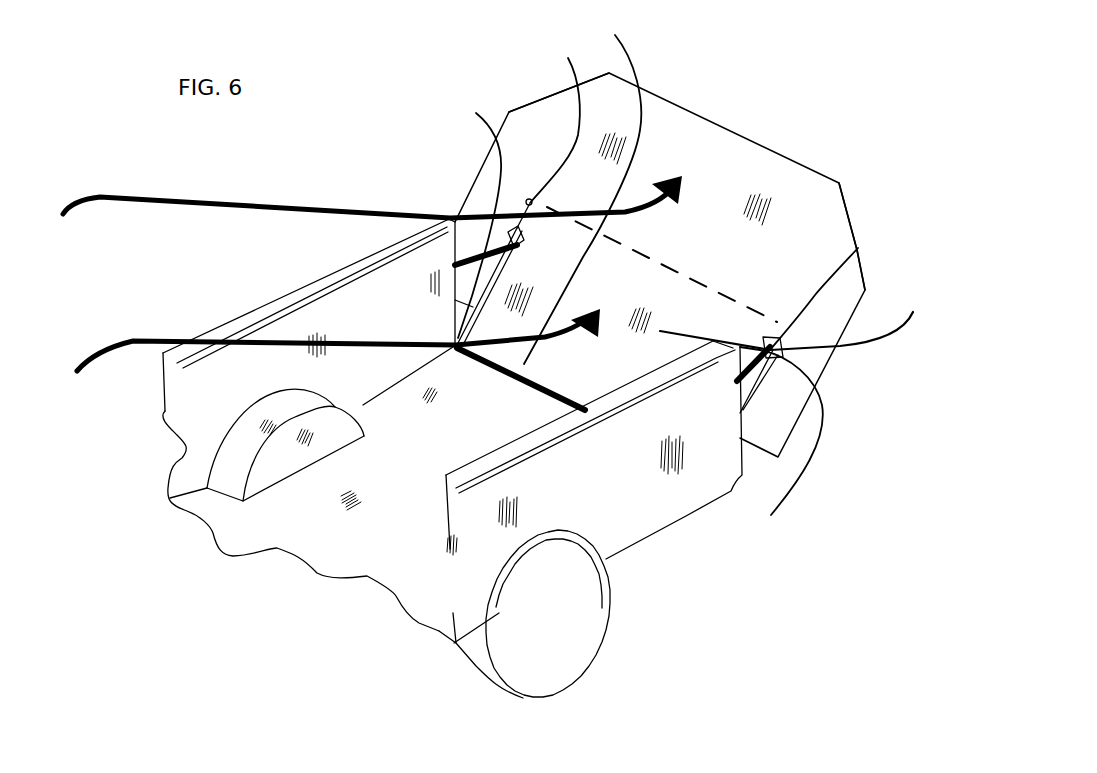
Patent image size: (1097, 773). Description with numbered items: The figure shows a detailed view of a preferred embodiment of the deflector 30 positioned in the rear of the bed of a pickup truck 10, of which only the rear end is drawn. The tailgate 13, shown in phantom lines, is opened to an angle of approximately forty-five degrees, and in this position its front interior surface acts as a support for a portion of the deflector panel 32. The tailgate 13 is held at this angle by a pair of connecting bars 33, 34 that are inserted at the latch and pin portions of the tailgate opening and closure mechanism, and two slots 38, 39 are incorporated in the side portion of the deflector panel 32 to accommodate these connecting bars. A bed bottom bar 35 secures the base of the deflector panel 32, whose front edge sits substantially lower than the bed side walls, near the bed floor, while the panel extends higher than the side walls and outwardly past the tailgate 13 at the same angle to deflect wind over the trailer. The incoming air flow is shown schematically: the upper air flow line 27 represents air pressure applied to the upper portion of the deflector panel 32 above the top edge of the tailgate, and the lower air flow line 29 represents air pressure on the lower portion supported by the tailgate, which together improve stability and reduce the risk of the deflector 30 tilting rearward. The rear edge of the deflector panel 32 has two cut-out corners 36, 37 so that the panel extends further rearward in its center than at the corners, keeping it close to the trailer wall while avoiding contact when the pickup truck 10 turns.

The pickup truck 10 is at (170, 497).
The tailgate 13 is at (771, 515).
The upper air flow line 27 is at (125, 192).
The lower air flow line 29 is at (153, 327).
The deflector 30 is at (700, 85).
The deflector panel 32 is at (700, 162).
The connecting bar 33 is at (479, 219).
The connecting bar 34 is at (791, 326).
The bed bottom bar 35 is at (582, 190).
The cut-out corner 36 is at (854, 210).
The cut-out corner 37 is at (543, 90).
The slot 38 is at (854, 257).
The slot 39 is at (517, 197).